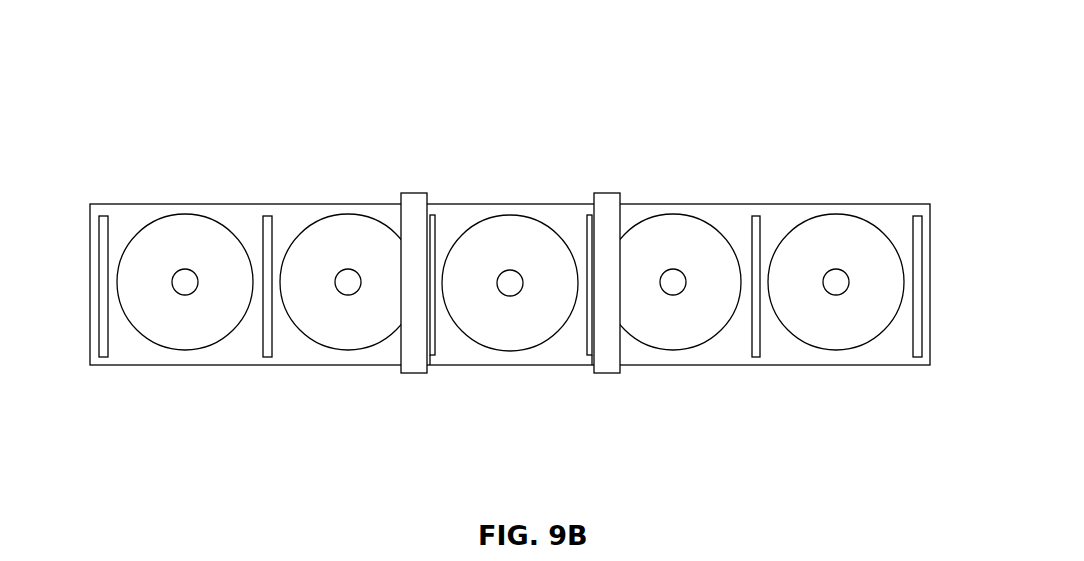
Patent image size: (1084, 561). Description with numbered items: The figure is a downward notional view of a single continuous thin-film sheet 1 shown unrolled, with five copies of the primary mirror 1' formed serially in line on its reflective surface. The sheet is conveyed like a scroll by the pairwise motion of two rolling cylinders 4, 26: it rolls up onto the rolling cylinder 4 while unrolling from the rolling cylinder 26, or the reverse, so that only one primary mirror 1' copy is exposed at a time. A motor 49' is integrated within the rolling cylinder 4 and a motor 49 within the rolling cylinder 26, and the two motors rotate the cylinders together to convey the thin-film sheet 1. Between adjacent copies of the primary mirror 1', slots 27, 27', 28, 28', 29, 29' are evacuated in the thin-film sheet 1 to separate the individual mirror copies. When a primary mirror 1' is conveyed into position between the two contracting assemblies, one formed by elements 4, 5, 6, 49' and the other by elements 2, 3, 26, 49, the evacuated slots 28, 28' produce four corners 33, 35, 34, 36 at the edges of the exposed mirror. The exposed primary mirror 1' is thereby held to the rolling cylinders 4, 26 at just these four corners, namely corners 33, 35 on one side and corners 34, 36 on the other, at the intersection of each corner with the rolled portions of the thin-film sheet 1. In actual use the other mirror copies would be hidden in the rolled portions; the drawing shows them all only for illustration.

The thin-film sheet 1 is at (510, 234).
The primary mirror 1' is at (510, 219).
The contracting assembly component 2 is at (609, 233).
The contracting assembly component 3 is at (707, 168).
The rolling cylinder 4 is at (411, 219).
The contracting assembly component 5 is at (260, 165).
The contracting assembly component 6 is at (283, 165).
The rolling cylinder 26 is at (740, 168).
The slot 27 is at (130, 318).
The slot 27' is at (296, 318).
The slot 28 is at (465, 318).
The slot 28' is at (556, 318).
The slot 29 is at (721, 318).
The slot 29' is at (883, 318).
The corner 33 is at (431, 360).
The corner 34 is at (593, 360).
The corner 35 is at (435, 205).
The corner 36 is at (590, 207).
The motor 49 is at (661, 213).
The motor 49' is at (378, 212).